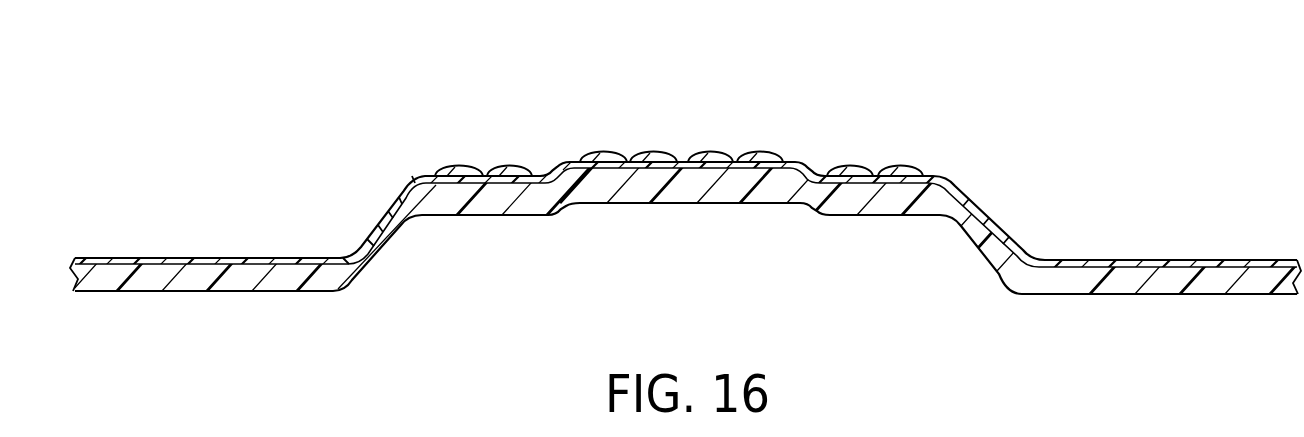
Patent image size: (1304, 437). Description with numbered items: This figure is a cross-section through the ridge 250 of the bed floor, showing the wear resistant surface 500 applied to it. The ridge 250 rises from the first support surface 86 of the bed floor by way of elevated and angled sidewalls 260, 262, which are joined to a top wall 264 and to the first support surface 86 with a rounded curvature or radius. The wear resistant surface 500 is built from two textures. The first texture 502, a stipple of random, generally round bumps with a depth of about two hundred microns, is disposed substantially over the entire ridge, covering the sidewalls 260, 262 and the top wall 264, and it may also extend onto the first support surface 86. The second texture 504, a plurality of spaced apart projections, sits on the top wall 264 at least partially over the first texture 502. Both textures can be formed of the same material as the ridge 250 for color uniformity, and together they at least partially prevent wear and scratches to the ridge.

The ridge 250 is at (687, 169).
The wear resistant surface 500 is at (686, 157).
The first texture 502 is at (408, 178).
The second texture 504 is at (612, 158).
The sidewall 260 is at (392, 245).
The sidewall 262 is at (980, 247).
The top wall 264 is at (599, 193).
The first support surface 86 is at (687, 217).